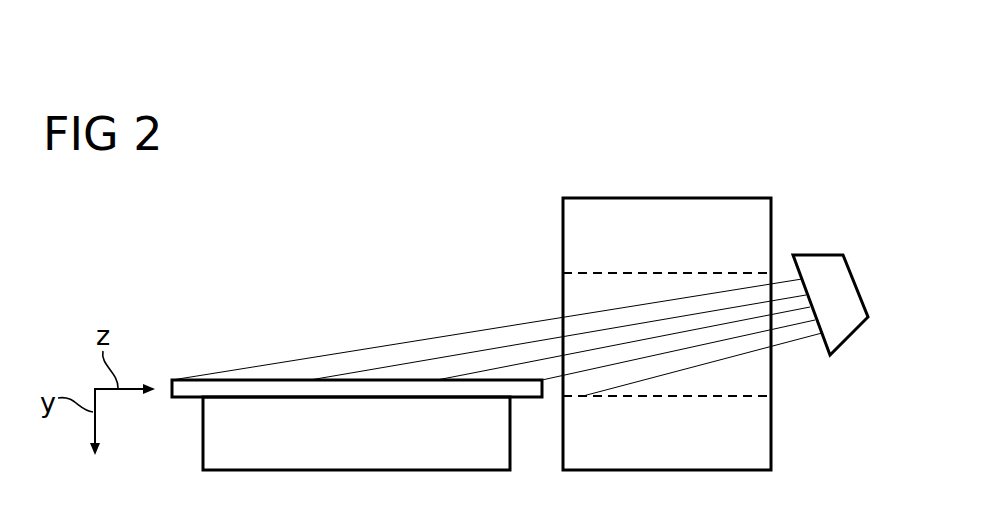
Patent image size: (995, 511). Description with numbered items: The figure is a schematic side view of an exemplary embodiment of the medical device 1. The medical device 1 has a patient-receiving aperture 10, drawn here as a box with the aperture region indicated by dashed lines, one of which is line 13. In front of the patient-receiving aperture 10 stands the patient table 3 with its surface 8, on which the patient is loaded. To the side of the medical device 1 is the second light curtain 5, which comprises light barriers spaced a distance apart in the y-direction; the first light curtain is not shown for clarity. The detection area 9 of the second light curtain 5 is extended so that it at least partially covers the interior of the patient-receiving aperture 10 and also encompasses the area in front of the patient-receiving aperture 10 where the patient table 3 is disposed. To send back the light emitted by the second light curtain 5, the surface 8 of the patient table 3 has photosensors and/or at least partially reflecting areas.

The medical device 1 is at (676, 197).
The patient table 3 is at (188, 395).
The second light curtain 5 is at (822, 253).
The surface of the patient table 8 is at (248, 379).
The detection area 9 is at (488, 340).
The patient-receiving aperture 10 is at (576, 284).
The lower detector line 13 is at (743, 395).